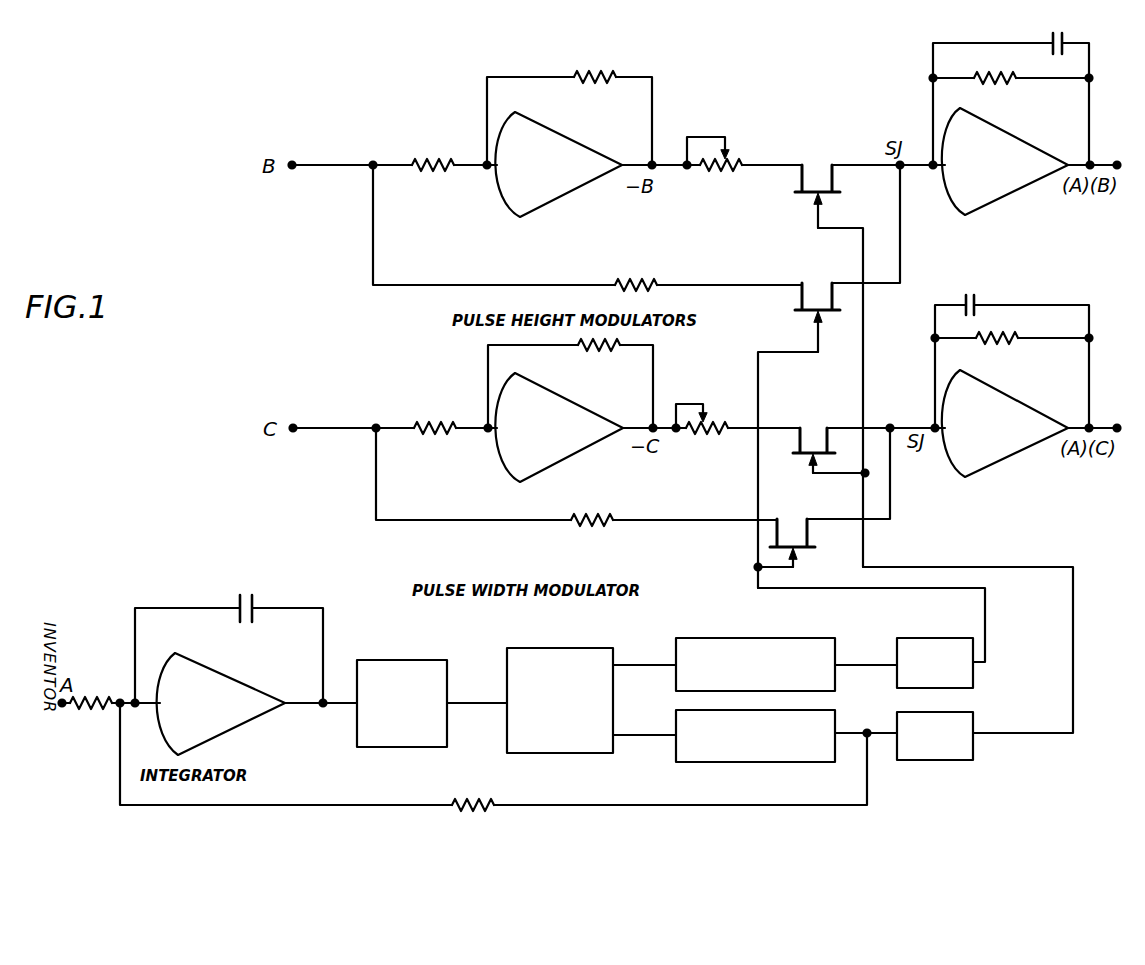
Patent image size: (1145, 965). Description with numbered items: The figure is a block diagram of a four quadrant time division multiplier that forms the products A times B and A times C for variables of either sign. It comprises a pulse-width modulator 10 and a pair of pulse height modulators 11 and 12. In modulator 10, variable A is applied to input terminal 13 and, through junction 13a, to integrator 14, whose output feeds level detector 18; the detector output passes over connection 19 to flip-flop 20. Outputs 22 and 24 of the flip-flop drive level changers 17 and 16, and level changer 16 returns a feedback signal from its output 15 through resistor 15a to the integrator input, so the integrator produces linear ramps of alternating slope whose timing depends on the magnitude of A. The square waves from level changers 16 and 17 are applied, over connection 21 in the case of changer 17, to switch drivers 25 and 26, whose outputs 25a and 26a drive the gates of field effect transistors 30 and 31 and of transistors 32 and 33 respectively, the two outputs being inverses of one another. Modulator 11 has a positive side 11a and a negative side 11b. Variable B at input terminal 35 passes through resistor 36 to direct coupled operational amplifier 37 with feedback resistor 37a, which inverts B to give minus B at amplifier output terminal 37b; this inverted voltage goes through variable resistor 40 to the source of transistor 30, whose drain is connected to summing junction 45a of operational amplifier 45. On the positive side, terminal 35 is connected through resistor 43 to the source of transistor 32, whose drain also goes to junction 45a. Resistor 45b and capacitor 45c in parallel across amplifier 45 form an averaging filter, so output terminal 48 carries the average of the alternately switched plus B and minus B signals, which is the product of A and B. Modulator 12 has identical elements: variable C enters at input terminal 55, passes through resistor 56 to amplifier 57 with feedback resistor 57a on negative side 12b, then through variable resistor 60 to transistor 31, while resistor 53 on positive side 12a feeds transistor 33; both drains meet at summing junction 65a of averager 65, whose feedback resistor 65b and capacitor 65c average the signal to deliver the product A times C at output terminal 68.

The pulse-width modulator 10 is at (657, 635).
The pulse height modulator 11 is at (462, 250).
The positive side of modulator 11 11a is at (560, 273).
The negative side of modulator 11 11b is at (757, 208).
The pulse height modulator 12 is at (440, 487).
The positive side of modulator 12 12a is at (652, 505).
The negative side of modulator 12 12b is at (730, 471).
The input terminal 13 is at (85, 704).
The input junction 13a is at (96, 700).
The integrator 14 is at (268, 657).
The feedback output 15 is at (868, 736).
The resistor 15a is at (465, 808).
The level changer 16 is at (762, 763).
The level changer 17 is at (832, 617).
The level detector 18 is at (391, 660).
The detector output line 19 is at (465, 702).
The flip-flop 20 is at (578, 648).
The level changer output line 21 is at (856, 667).
The flip-flop output 22 is at (660, 666).
The flip-flop output 24 is at (650, 737).
The switch driver 25 is at (975, 718).
The driver output 25a is at (1075, 715).
The switch driver 26 is at (950, 617).
The driver output terminal 26a is at (758, 588).
The field effect transistor 30 is at (818, 186).
The field effect transistor 31 is at (810, 446).
The field effect transistor 32 is at (810, 305).
The field effect transistor 33 is at (792, 540).
The input terminal 35 is at (294, 162).
The resistor 36 is at (440, 165).
The direct coupled operational amplifier 37 is at (588, 183).
The feedback resistor 37a is at (597, 78).
The amplifier output terminal 37b is at (652, 163).
The variable resistor 40 is at (724, 150).
The resistor 43 is at (652, 283).
The direct coupled operational amplifier 45 is at (1020, 183).
The summing junction 45a is at (902, 167).
The resistor 45b is at (1006, 78).
The capacitor 45c is at (1066, 44).
The output terminal 48 is at (1118, 163).
The resistor 53 is at (603, 522).
The input terminal 55 is at (295, 426).
The input resistor 56 is at (428, 428).
The inverting amplifier 57 is at (582, 441).
The feedback resistor 57a is at (596, 349).
The potentiometer 60 is at (708, 414).
The averager 65 is at (1020, 446).
The summing junction 65a is at (891, 426).
The feedback resistor 65b is at (1003, 339).
The feedback capacitor 65c is at (976, 304).
The output terminal 68 is at (1118, 426).